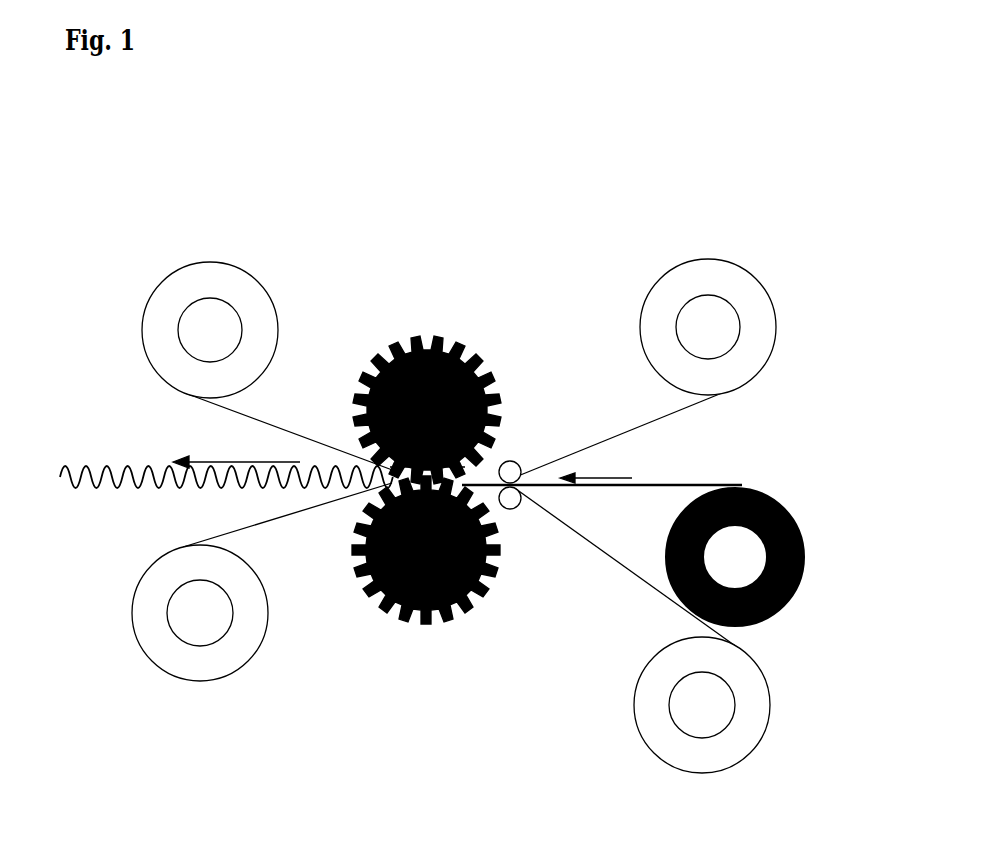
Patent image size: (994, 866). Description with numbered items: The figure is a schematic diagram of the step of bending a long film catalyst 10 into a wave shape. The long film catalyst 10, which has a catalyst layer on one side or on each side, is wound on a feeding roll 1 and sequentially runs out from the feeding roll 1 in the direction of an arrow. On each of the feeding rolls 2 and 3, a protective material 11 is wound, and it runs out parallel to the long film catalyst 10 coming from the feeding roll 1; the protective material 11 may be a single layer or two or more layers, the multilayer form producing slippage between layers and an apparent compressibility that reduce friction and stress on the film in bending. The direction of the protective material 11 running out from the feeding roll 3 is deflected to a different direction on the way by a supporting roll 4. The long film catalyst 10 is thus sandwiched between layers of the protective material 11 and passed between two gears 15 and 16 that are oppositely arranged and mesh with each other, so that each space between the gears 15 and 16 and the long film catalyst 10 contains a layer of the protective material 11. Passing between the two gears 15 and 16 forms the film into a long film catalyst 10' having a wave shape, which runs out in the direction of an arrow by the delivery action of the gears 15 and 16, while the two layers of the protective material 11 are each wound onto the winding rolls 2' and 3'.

The feeding roll 1 is at (735, 557).
The feeding roll 2 is at (702, 735).
The winding roll 2' is at (200, 659).
The feeding roll 3 is at (736, 327).
The winding roll 3' is at (210, 294).
The supporting roll 4 is at (507, 462).
The long film catalyst 10 is at (644, 545).
The long film catalyst having a wave shape 10' is at (211, 445).
The protective material 11 is at (273, 427).
The gear 15 is at (405, 600).
The gear 16 is at (415, 345).